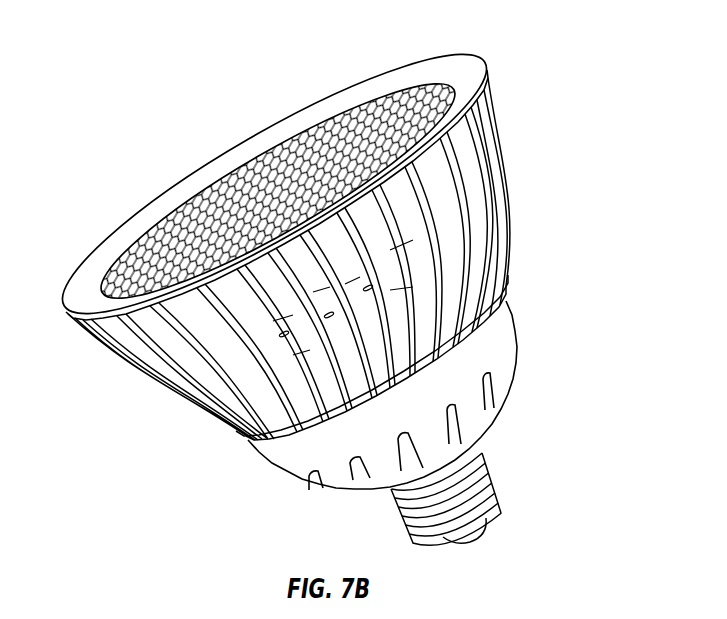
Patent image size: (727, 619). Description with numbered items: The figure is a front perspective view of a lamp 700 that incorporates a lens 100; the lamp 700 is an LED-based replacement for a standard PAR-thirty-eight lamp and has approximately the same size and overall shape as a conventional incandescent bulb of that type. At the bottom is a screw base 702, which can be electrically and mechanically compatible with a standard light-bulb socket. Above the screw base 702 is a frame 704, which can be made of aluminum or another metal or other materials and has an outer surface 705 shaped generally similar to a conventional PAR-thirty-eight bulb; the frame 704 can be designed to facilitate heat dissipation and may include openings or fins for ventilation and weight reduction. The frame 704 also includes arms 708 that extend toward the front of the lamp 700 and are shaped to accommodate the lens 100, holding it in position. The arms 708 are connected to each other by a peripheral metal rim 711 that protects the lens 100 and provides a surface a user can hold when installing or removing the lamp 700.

The lamp 700 is at (74, 151).
The peripheral metal rim 711 is at (468, 68).
The lens 100 is at (214, 245).
The arms 708 is at (502, 170).
The outer surface 705 is at (262, 470).
The frame 704 is at (428, 413).
The screw base 702 is at (408, 516).